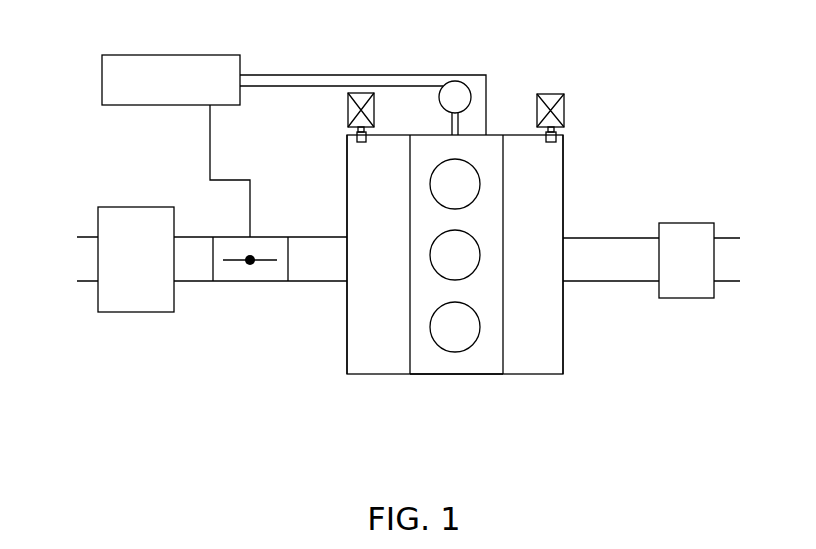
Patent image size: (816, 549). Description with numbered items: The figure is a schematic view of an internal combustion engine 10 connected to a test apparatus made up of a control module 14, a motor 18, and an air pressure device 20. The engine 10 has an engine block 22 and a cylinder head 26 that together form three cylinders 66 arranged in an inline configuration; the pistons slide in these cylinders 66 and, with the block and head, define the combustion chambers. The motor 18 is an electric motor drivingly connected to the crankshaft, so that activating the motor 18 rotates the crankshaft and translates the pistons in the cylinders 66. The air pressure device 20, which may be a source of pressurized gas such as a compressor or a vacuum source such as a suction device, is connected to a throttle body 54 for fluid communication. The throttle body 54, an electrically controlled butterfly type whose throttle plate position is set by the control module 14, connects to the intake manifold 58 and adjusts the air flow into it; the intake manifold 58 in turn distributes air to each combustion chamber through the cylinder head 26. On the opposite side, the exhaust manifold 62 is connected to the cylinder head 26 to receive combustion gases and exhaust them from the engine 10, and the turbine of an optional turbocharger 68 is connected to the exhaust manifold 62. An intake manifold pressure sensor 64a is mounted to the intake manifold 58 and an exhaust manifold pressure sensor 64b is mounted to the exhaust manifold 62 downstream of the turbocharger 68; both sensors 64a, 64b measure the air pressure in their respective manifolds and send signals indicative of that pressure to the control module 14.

The engine 10 is at (690, 70).
The control module 14 is at (102, 74).
The motor 18 is at (457, 82).
The air pressure device 20 is at (138, 207).
The engine block 22 is at (487, 375).
The cylinder head 26 is at (417, 367).
The throttle body 54 is at (245, 282).
The intake manifold 58 is at (355, 332).
The exhaust manifold 62 is at (556, 330).
The intake manifold pressure sensor 64a is at (348, 108).
The exhaust manifold pressure sensor 64b is at (551, 94).
The cylinders 66 is at (465, 185).
The turbocharger 68 is at (682, 223).